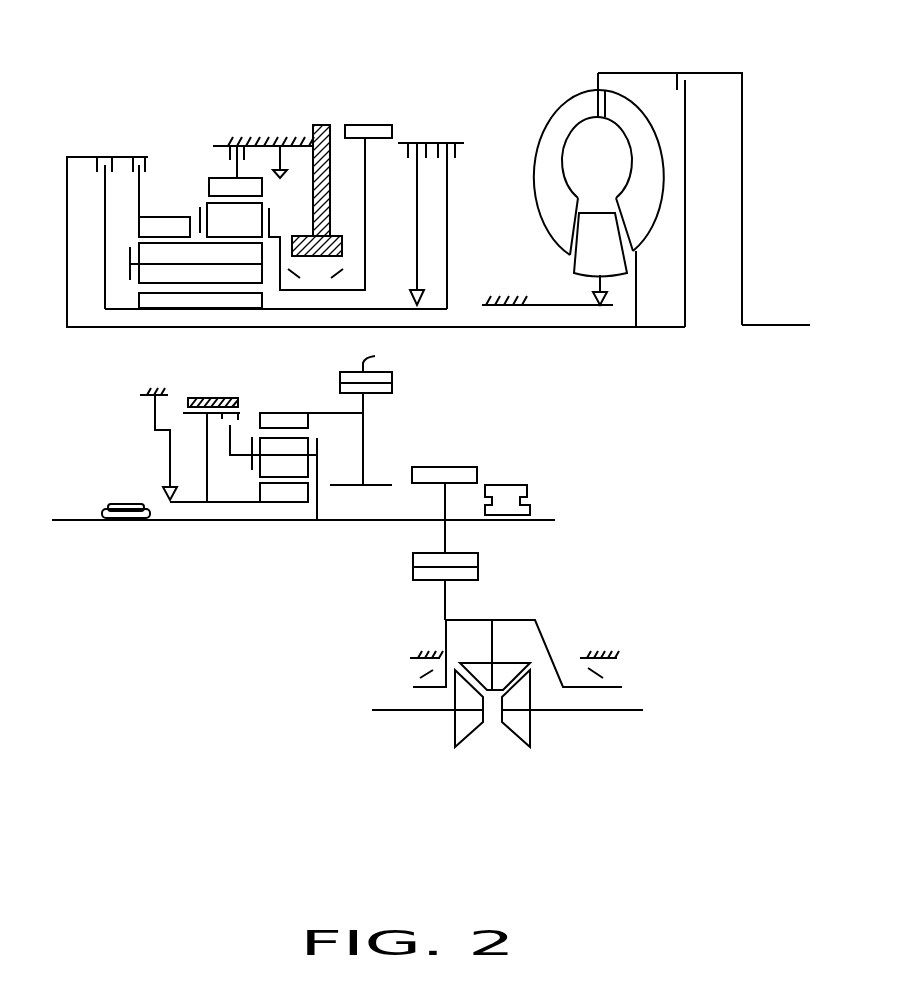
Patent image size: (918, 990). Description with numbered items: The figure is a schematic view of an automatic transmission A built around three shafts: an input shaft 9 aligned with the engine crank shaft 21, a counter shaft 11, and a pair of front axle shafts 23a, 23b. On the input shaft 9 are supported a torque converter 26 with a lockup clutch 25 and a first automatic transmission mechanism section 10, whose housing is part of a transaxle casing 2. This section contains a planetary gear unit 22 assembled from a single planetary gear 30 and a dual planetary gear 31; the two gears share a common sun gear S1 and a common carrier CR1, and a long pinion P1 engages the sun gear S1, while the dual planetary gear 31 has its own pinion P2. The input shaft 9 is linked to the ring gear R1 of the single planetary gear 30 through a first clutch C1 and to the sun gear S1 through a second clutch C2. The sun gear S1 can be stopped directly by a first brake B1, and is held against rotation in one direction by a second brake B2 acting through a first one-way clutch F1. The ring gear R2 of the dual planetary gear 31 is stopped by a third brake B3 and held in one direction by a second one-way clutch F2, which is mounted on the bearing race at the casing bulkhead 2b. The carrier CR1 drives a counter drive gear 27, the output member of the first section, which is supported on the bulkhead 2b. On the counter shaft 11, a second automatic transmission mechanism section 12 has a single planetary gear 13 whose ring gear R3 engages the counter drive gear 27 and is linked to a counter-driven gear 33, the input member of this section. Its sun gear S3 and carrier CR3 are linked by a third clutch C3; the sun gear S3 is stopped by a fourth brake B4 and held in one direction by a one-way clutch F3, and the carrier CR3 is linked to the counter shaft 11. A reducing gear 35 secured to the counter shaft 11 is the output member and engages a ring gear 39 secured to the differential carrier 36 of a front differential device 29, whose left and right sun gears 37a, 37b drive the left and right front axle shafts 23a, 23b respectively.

The automatic transmission A is at (137, 70).
The first automatic transmission mechanism section 10 is at (78, 142).
The input shaft 9 is at (110, 330).
The planetary gear unit 22 is at (236, 78).
The single planetary gear 30 is at (157, 208).
The dual planetary gear 31 is at (214, 176).
The transaxle casing 2 is at (262, 140).
The casing bulkhead 2b is at (326, 215).
The counter drive gear 27 is at (368, 125).
The third brake B3 is at (263, 134).
The second one-way clutch F2 is at (284, 141).
The second brake B2 is at (431, 133).
The first brake B1 is at (454, 210).
The second clutch C2 is at (109, 213).
The first clutch C1 is at (145, 167).
The ring gear R2 is at (237, 188).
The pinion P2 is at (250, 228).
The ring gear R1 is at (150, 228).
The long pinion P1 is at (150, 277).
The sun gear S1 is at (200, 303).
The carrier CR1 is at (268, 276).
The first one-way clutch F1 is at (399, 224).
The torque converter 26 is at (576, 78).
The lockup clutch 25 is at (695, 80).
The engine crank shaft 21 is at (778, 322).
The counter shaft 11 is at (183, 522).
The second automatic transmission mechanism section 12 is at (152, 442).
The one-way clutch F3 is at (194, 448).
The fourth brake B4 is at (214, 433).
The third clutch C3 is at (218, 425).
The single planetary gear 13 is at (288, 402).
The ring gear R3 is at (298, 420).
The sun gear S3 is at (275, 498).
The carrier CR3 is at (325, 463).
The counter-driven gear 33 is at (395, 387).
The reducing gear 35 is at (455, 467).
The ring gear 39 is at (422, 577).
The differential carrier 36 is at (513, 617).
The front differential device 29 is at (492, 745).
The left sun gear 37a is at (463, 747).
The right sun gear 37b is at (522, 747).
The left front axle shaft 23a is at (412, 713).
The right front axle shaft 23b is at (623, 713).